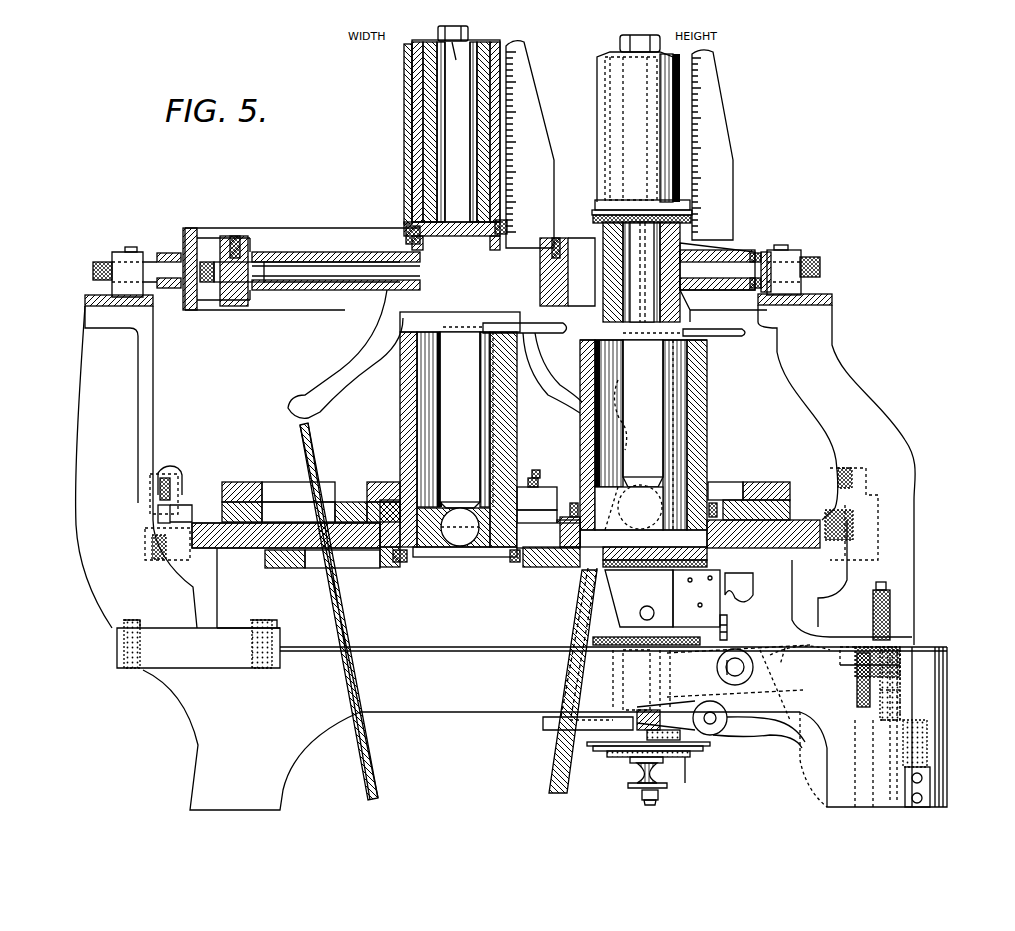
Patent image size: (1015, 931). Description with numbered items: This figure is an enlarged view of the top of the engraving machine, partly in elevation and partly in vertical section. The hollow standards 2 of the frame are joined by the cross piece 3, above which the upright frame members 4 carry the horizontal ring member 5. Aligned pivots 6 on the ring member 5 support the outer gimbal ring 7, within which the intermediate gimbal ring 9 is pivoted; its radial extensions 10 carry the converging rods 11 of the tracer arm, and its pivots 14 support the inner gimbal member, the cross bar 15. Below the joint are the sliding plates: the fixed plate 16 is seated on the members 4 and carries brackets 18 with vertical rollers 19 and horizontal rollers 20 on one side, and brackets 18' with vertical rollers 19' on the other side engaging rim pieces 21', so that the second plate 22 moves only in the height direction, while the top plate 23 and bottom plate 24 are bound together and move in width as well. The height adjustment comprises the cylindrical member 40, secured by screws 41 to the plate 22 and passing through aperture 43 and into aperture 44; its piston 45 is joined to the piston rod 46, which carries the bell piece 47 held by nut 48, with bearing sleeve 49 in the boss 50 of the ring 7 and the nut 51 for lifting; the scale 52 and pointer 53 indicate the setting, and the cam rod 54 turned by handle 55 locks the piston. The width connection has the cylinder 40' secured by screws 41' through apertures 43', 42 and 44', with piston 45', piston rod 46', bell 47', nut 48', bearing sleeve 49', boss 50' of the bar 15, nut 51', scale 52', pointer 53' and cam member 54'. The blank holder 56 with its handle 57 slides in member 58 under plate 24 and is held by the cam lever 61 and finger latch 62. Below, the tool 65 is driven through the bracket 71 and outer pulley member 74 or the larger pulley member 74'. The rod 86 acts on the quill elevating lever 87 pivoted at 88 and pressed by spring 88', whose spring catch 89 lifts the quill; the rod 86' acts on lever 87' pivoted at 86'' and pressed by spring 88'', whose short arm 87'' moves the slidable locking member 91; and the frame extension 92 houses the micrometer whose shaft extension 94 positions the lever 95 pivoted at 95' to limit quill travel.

The hollow standards 2 is at (270, 782).
The cross piece 3 is at (470, 706).
The upright frame members 4 is at (88, 445).
The horizontal ring member 5 is at (132, 250).
The pivots 6 is at (93, 272).
The outer gimbal ring 7 is at (190, 232).
The intermediate gimbal ring 9 is at (248, 262).
The radial extensions 10 is at (352, 385).
The converging rods 11 is at (342, 618).
The pivots 14 is at (226, 240).
The cross bar 15 is at (320, 252).
The fixed plate 16 is at (215, 540).
The brackets 18 is at (883, 513).
The brackets 18' is at (174, 473).
The vertical rollers 19 is at (867, 470).
The vertical rollers 19' is at (145, 520).
The horizontal rollers 20 is at (878, 518).
The rim pieces 21' is at (145, 516).
The second plate 22 is at (236, 503).
The top plate 23 is at (765, 482).
The bottom plate 24 is at (286, 568).
The cylindrical member 40 is at (664, 435).
The cylinder 40' is at (548, 484).
The screws 41 is at (654, 485).
The screws 41' is at (482, 521).
The aperture 42 is at (375, 498).
The aperture 43 is at (743, 474).
The aperture 43' is at (553, 469).
The aperture 44 is at (615, 560).
The aperture 44' is at (391, 580).
The piston 45 is at (643, 516).
The piston 45' is at (465, 469).
The piston rod 46 is at (680, 413).
The piston rod 46' is at (443, 429).
The bell piece 47 is at (621, 180).
The bell 47' is at (433, 131).
The nut 48 is at (626, 37).
The nut 48' is at (453, 55).
The bearing sleeve 49 is at (729, 258).
The bearing sleeve 49' is at (438, 214).
The boss 50 is at (769, 246).
The boss 50' is at (391, 134).
The nut 51 is at (684, 195).
The nut 51' is at (381, 219).
The scale 52 is at (726, 145).
The scale 52' is at (542, 144).
The pointer 53 is at (679, 176).
The pointer 53' is at (539, 201).
The cam rod 54 is at (705, 435).
The cam member 54' is at (520, 439).
The handle 55 is at (566, 328).
The holder 56 is at (639, 598).
The handle 57 is at (648, 606).
The member 58 is at (592, 596).
The cam lever 61 is at (755, 598).
The finger latch 62 is at (728, 630).
The tool 65 is at (648, 806).
The bracket 71 is at (545, 722).
The outer pulley member 74 is at (668, 777).
The inner member of larger pulley 74' is at (642, 762).
The vertical rod 86 is at (852, 683).
The rod 86' is at (934, 685).
The pivot 86'' is at (800, 641).
The quill elevating lever 87 is at (759, 743).
The lever 87' is at (901, 641).
The short arm 87'' is at (864, 648).
The pivot 88 is at (687, 739).
The spring 88' is at (916, 657).
The spring 88'' is at (915, 591).
The spring catch 89 is at (645, 732).
The slidable locking member 91 is at (620, 690).
The extension 92 is at (905, 700).
The shaft extension 94 is at (930, 714).
The lever 95 is at (918, 651).
The pivot 95' is at (698, 667).